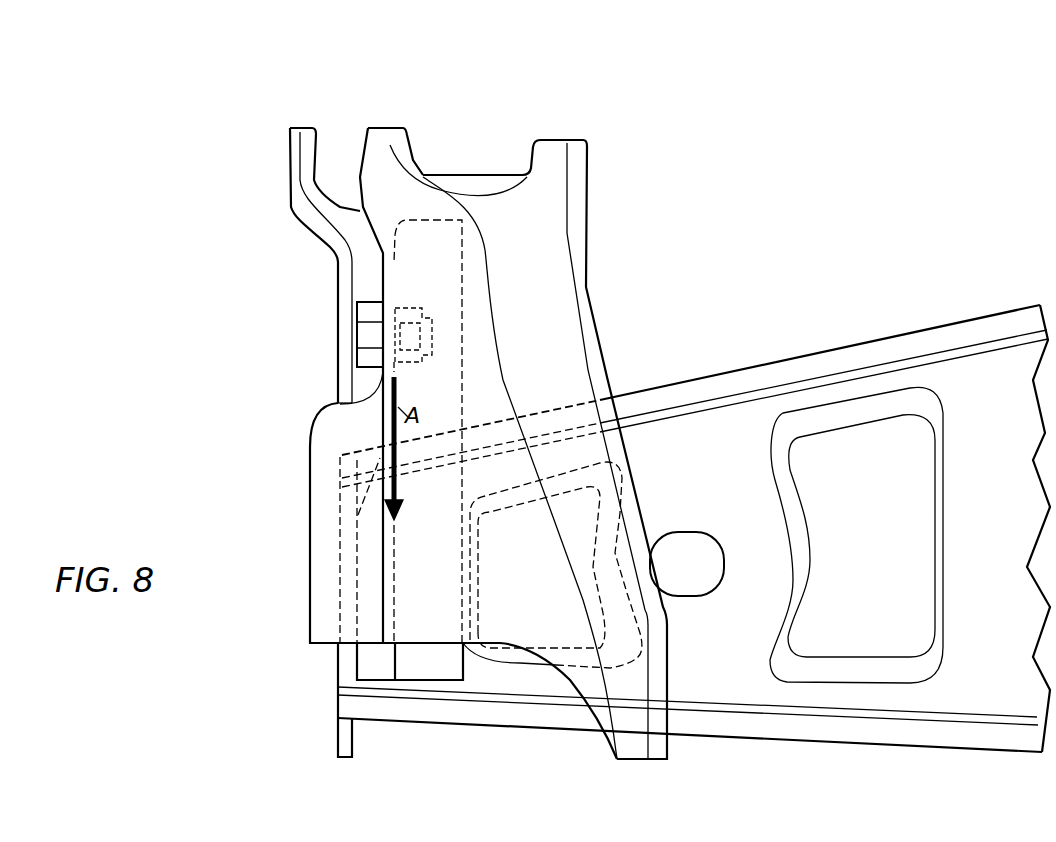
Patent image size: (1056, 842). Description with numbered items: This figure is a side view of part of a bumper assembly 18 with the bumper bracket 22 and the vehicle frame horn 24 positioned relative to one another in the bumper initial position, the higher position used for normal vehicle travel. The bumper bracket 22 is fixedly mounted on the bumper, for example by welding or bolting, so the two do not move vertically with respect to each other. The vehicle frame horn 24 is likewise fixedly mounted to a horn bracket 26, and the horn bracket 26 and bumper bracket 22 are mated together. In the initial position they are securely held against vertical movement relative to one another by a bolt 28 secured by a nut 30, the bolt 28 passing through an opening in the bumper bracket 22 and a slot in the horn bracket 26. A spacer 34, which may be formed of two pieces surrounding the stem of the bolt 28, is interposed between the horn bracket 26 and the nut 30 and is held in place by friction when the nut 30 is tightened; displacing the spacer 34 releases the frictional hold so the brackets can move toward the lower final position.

The bumper assembly 18 is at (327, 94).
The bumper bracket 22 is at (313, 443).
The vehicle frame horn 24 is at (1002, 538).
The horn bracket 26 is at (423, 663).
The bolt 28 is at (357, 338).
The nut 30 is at (417, 307).
The spacer 34 is at (395, 300).